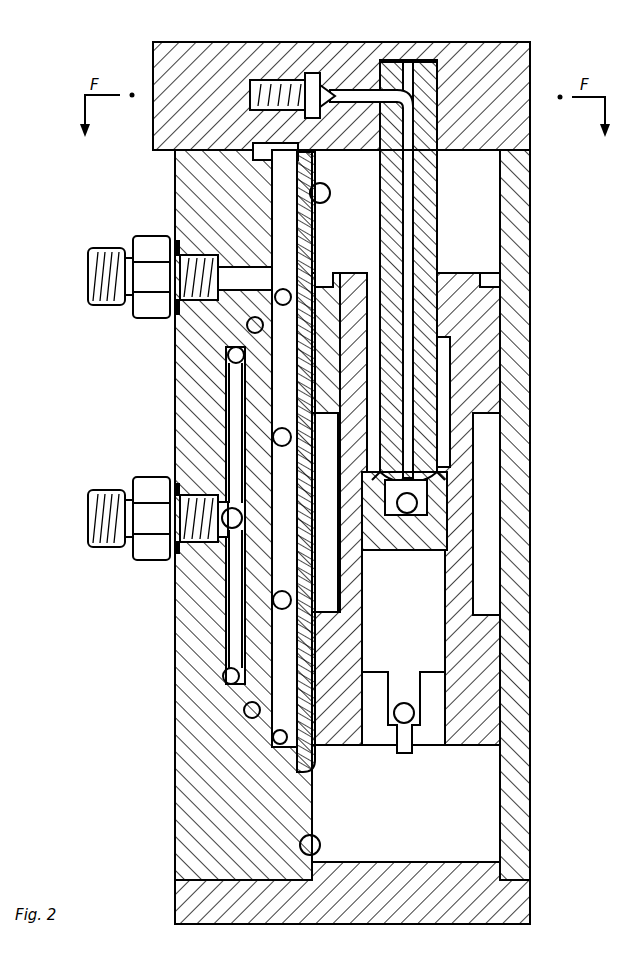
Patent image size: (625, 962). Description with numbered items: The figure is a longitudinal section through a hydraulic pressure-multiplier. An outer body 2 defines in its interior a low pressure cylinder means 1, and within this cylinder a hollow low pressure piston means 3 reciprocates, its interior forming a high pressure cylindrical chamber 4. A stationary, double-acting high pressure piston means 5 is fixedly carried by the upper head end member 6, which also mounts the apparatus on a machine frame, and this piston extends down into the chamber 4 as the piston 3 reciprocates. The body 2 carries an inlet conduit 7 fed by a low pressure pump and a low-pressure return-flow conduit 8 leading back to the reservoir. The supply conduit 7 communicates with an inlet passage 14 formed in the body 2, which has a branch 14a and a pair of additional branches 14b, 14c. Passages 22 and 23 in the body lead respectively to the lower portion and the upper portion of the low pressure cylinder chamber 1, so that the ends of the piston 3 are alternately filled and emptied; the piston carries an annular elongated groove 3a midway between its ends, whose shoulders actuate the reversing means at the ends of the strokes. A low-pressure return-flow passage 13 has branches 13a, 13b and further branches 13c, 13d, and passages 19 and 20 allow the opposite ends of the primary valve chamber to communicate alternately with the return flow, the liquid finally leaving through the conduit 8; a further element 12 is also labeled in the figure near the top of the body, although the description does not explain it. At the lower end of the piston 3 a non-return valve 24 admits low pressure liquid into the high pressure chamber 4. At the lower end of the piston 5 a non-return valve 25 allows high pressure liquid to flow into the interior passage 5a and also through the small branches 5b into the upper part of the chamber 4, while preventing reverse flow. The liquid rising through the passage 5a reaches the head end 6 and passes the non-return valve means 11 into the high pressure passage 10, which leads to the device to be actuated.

The low pressure cylinder means 1 is at (469, 227).
The outer body 2 is at (185, 843).
The low pressure piston means 3 is at (465, 583).
The annular elongated groove 3a is at (334, 582).
The high pressure cylindrical chamber 4 is at (409, 650).
The high pressure piston means 5 is at (427, 277).
The interior passage 5a is at (412, 125).
The branches 5b is at (430, 482).
The upper head end member 6 is at (243, 52).
The inlet conduit 7 is at (105, 490).
The low-pressure return-flow conduit 8 is at (100, 278).
The high pressure passage 10 is at (312, 75).
The non-return valve means 11 is at (336, 97).
The vent opening 12 is at (258, 153).
The low-pressure return-flow passage 13 is at (283, 225).
The branch 13a is at (282, 591).
The branch 13b is at (282, 428).
The branch 13c is at (305, 772).
The branch 13d is at (290, 294).
The inlet passage 14 is at (224, 530).
The branch 14a is at (215, 472).
The branch 14b is at (224, 662).
The branch 14c is at (236, 365).
The passage 19 is at (246, 712).
The passage 20 is at (249, 325).
The passage 22 is at (318, 843).
The passage 23 is at (325, 198).
The non-return valve 24 is at (404, 705).
The non-return valve 25 is at (407, 513).